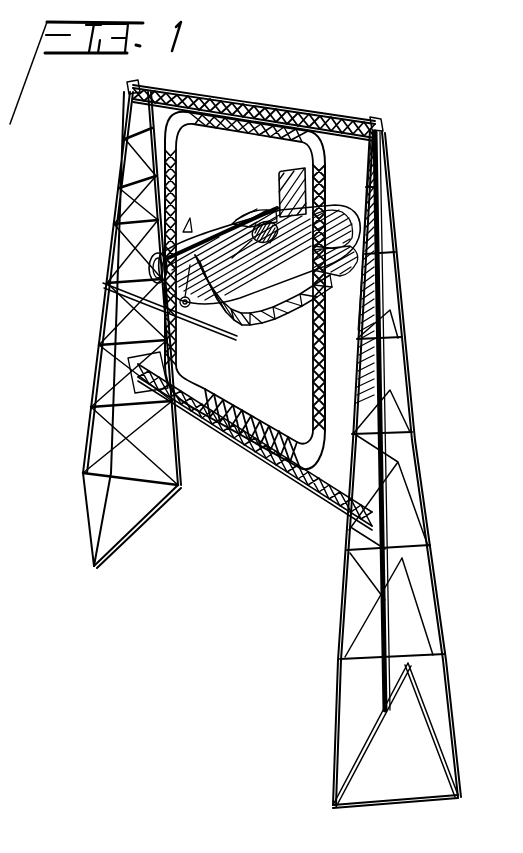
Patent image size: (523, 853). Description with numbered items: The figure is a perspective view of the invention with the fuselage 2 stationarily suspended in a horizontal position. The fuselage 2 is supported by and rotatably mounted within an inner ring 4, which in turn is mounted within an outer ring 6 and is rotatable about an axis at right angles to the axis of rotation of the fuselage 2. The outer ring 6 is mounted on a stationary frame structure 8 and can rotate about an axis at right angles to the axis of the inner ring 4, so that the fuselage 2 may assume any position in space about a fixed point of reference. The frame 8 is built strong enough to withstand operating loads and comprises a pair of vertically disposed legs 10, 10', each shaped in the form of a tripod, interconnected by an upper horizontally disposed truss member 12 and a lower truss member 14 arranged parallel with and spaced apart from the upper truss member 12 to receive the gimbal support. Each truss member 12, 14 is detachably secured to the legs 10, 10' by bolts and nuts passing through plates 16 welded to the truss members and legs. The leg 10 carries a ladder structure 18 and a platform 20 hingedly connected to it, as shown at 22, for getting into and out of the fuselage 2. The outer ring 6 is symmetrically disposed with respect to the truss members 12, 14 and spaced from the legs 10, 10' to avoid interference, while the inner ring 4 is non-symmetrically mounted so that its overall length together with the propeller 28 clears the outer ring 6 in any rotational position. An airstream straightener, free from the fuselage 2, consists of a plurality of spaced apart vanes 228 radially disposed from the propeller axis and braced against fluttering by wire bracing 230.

The fuselage 2 is at (264, 322).
The inner ring 4 is at (323, 297).
The outer ring 6 is at (318, 187).
The stationary frame structure 8 is at (137, 526).
The leg 10 is at (399, 469).
The leg 10' is at (101, 329).
The upper truss member 12 is at (350, 118).
The lower truss member 14 is at (305, 482).
The plates 16 is at (130, 89).
The ladder structure 18 is at (391, 348).
The platform 20 is at (385, 268).
The hinge connection 22 is at (360, 314).
The propeller 28 is at (212, 335).
The vanes 228 is at (160, 256).
The wire bracing 230 is at (213, 246).